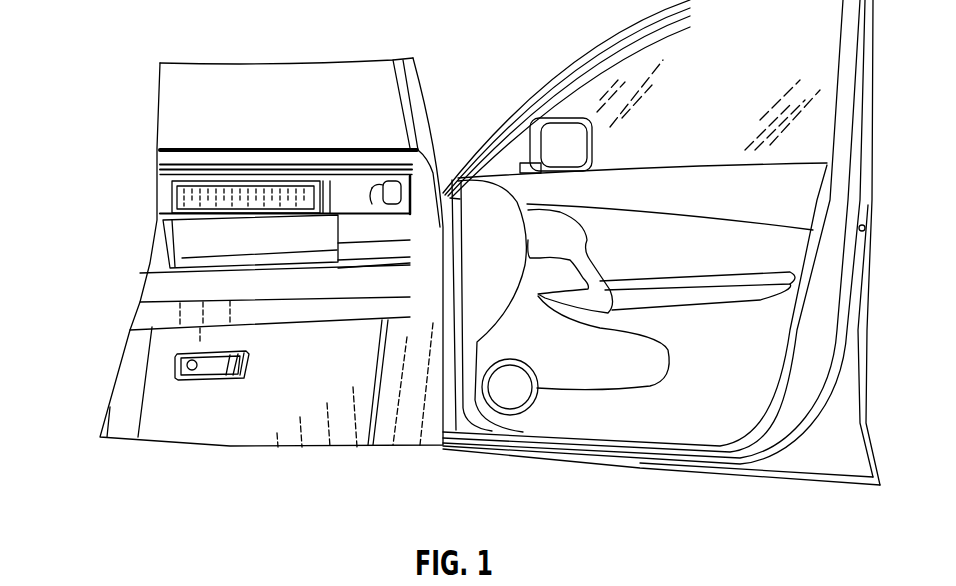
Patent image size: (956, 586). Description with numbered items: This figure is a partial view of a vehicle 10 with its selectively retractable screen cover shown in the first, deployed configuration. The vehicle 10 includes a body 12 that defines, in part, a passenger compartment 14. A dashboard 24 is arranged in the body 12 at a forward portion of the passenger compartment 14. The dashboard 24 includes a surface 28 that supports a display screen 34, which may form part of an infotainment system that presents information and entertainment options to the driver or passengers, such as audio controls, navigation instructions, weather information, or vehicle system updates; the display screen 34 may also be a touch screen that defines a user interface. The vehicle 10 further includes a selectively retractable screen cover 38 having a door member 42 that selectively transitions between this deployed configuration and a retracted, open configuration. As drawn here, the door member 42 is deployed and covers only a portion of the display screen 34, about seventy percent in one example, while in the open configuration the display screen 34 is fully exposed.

The vehicle 10 is at (92, 337).
The body 12 is at (432, 87).
The passenger compartment 14 is at (222, 72).
The dashboard 24 is at (155, 247).
The surface 28 is at (323, 282).
The display screen 34 is at (243, 193).
The selectively retractable screen cover 38 is at (350, 226).
The door member 42 is at (233, 243).